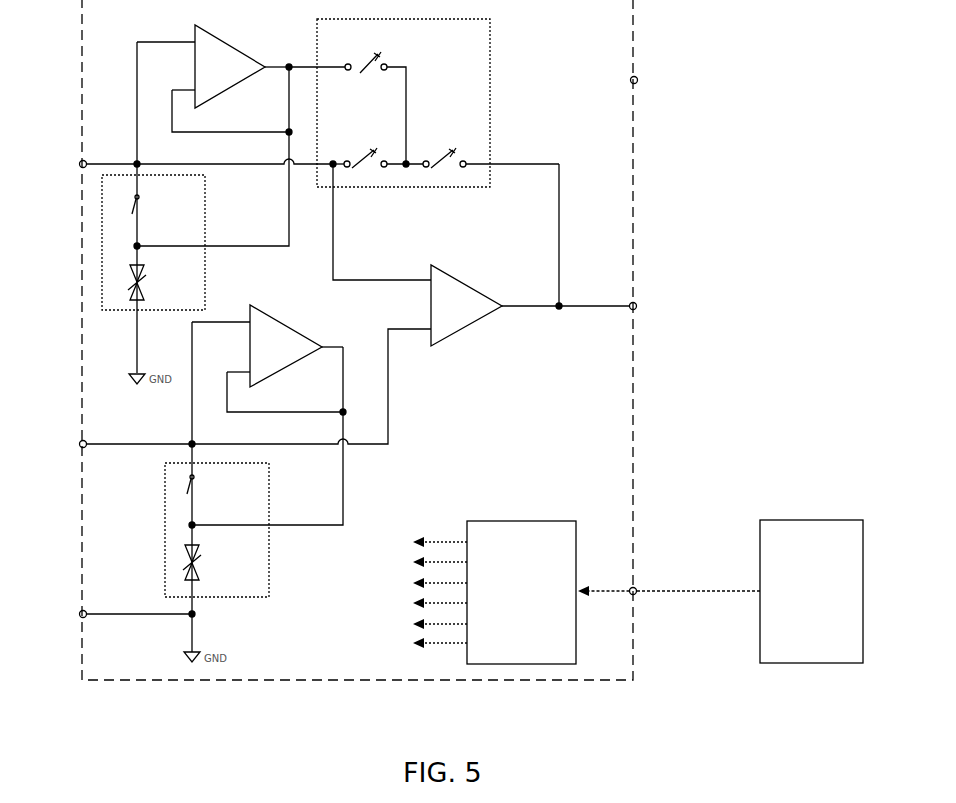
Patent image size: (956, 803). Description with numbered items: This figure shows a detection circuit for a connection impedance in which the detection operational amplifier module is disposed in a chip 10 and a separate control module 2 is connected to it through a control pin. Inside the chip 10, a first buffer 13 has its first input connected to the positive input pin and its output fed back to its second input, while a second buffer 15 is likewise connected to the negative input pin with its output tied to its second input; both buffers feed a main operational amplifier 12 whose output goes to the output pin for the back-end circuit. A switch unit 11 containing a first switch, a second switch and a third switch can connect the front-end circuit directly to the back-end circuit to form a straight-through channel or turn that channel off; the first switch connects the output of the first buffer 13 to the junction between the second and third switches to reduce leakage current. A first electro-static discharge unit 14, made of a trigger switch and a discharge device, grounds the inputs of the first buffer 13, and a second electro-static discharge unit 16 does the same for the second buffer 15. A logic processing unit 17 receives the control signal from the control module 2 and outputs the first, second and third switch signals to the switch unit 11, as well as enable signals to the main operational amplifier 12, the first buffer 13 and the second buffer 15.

The control module 2 is at (780, 520).
The chip 10 is at (633, 422).
The switch unit 11 is at (490, 121).
The main operational amplifier 12 is at (462, 281).
The first buffer 13 is at (228, 37).
The first electro-static discharge unit 14 is at (205, 283).
The second buffer 15 is at (283, 320).
The second electro-static discharge unit 16 is at (269, 502).
The logic processing unit 17 is at (500, 521).